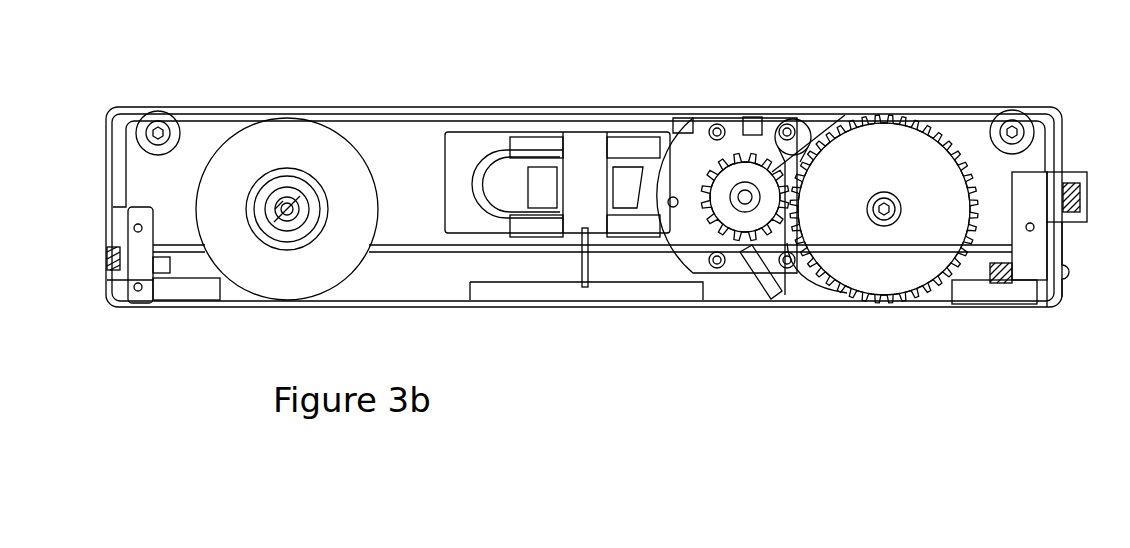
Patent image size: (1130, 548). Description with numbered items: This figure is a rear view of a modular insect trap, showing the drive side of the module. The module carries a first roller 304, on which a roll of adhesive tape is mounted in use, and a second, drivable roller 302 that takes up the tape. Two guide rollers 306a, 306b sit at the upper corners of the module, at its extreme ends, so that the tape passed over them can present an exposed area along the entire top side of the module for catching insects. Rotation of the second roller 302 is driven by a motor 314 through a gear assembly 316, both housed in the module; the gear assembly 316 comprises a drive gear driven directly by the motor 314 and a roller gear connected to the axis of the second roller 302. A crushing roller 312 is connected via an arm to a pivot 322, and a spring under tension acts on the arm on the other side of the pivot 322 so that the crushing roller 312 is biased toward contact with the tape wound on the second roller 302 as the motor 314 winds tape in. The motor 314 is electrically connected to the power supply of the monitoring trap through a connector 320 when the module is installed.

The second roller 302 is at (898, 158).
The first roller 304 is at (284, 165).
The guide roller 306a is at (160, 112).
The guide roller 306b is at (1017, 111).
The crushing roller 312 is at (795, 132).
The motor 314 is at (670, 218).
The gear assembly 316 is at (746, 214).
The connector 320 is at (1077, 224).
The pivot 322 is at (765, 272).